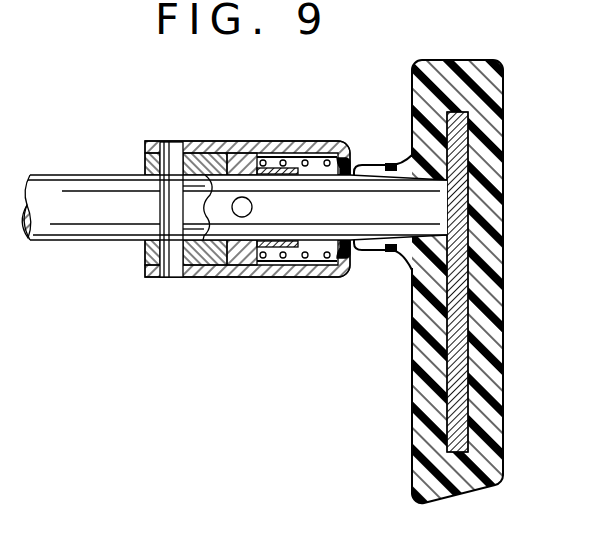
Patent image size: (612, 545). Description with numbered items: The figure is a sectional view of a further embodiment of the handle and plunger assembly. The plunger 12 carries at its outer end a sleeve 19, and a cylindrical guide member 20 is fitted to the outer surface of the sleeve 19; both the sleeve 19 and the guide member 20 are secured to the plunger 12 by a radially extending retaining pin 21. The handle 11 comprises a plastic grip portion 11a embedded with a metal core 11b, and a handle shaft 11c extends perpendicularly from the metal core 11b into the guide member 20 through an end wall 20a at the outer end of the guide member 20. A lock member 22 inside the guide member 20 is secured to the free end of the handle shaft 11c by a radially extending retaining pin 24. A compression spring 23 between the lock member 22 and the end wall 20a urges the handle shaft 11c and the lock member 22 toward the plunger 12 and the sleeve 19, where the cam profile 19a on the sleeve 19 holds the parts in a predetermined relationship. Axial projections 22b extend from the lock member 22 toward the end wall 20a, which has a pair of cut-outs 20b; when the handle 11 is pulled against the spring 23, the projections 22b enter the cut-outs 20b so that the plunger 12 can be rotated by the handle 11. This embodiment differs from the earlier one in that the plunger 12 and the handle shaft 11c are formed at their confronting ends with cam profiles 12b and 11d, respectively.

The handle 11 is at (493, 281).
The grip portion 11a is at (487, 393).
The metal core 11b is at (452, 398).
The handle shaft 11c is at (313, 223).
The cam profile 11d is at (216, 265).
The plunger 12 is at (84, 250).
The cam profile 12b is at (207, 178).
The sleeve 19 is at (192, 268).
The cam profile 19a is at (19, 9).
The guide member 20 is at (236, 147).
The end wall 20a is at (345, 150).
The cut-outs 20b is at (352, 262).
The retaining pin 21 is at (167, 207).
The lock member 22 is at (250, 160).
The axial projections 22b is at (290, 260).
The compression spring 23 is at (289, 262).
The retaining pin 24 is at (244, 218).